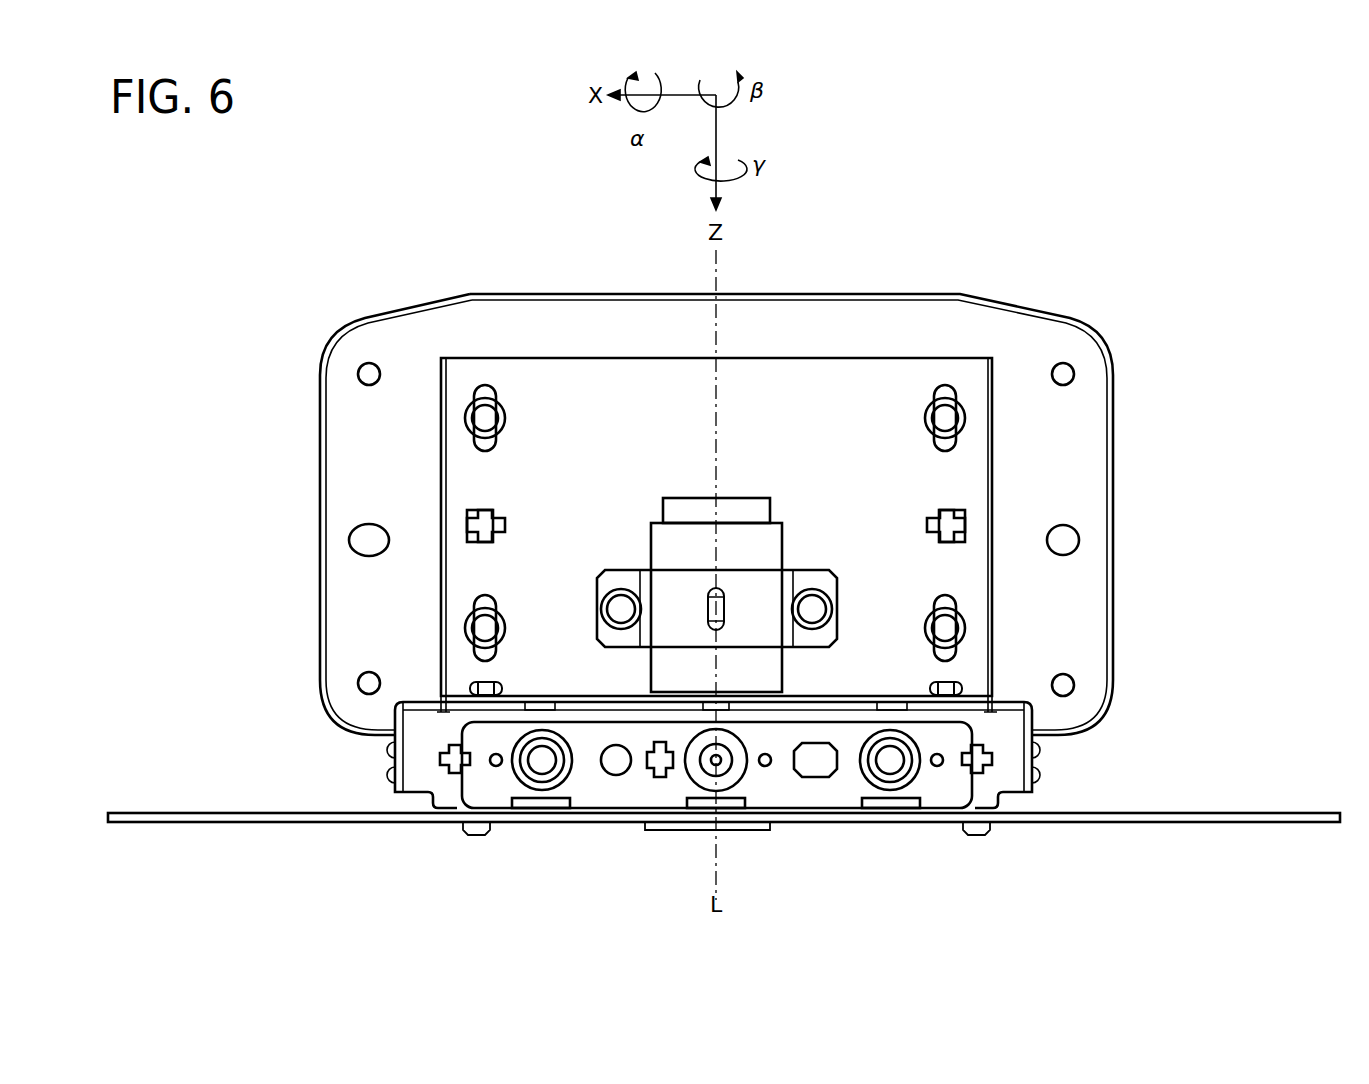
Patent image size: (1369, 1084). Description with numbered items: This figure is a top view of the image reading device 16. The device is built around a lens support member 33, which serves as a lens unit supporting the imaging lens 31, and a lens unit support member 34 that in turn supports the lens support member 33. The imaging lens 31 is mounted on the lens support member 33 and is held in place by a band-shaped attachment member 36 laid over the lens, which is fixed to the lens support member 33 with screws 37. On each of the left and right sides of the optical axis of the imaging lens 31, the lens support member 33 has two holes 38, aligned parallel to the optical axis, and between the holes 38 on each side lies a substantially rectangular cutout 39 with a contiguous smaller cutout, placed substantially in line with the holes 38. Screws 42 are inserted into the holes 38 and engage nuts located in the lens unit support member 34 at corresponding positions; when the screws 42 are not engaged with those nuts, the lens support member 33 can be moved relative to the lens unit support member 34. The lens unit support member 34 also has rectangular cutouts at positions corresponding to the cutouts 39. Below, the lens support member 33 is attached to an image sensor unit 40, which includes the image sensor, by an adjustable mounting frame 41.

The image reading device 16 is at (1162, 238).
The imaging lens 31 is at (771, 677).
The lens support member 33 is at (636, 371).
The lens unit support member 34 is at (338, 443).
The band-shaped attachment member 36 is at (717, 570).
The screws 37 is at (621, 603).
The holes 38 is at (715, 517).
The cutout 39 is at (490, 513).
The image sensor unit 40 is at (1127, 822).
The adjustable mounting frame 41 is at (600, 793).
The screws 42 is at (497, 423).